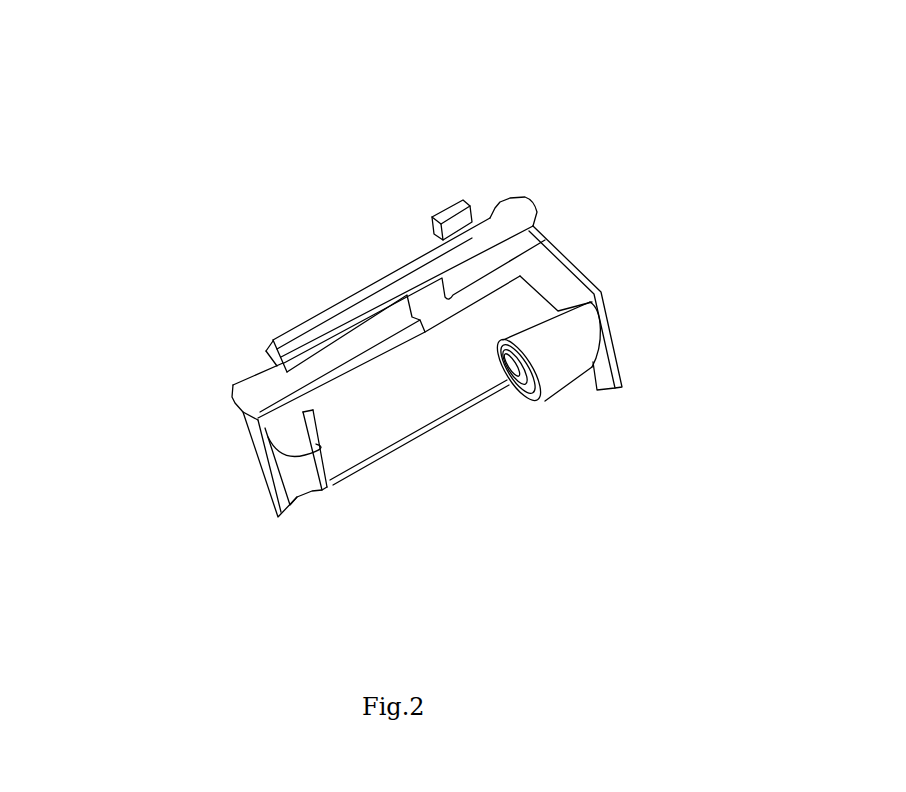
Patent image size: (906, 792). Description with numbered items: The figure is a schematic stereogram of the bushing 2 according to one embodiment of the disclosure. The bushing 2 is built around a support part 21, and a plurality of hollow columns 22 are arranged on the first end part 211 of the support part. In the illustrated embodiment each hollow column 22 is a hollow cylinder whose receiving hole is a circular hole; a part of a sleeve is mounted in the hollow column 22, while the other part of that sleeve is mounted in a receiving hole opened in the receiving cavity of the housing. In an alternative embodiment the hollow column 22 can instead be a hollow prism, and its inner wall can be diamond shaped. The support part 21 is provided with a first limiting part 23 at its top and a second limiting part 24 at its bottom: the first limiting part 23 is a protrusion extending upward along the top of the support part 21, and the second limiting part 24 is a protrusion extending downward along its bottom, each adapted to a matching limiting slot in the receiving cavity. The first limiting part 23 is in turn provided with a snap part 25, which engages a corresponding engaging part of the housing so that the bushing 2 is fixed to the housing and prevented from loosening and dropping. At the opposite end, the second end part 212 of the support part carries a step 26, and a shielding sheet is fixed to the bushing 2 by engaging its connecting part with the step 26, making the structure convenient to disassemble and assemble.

The bushing 2 is at (238, 124).
The support part 21 is at (383, 412).
The first end part of the support part 211 is at (613, 323).
The second end part of the support part 212 is at (262, 445).
The hollow column 22 is at (555, 367).
The first limiting part 23 is at (272, 342).
The second limiting part 24 is at (303, 498).
The snap part 25 is at (463, 200).
The step 26 is at (270, 485).